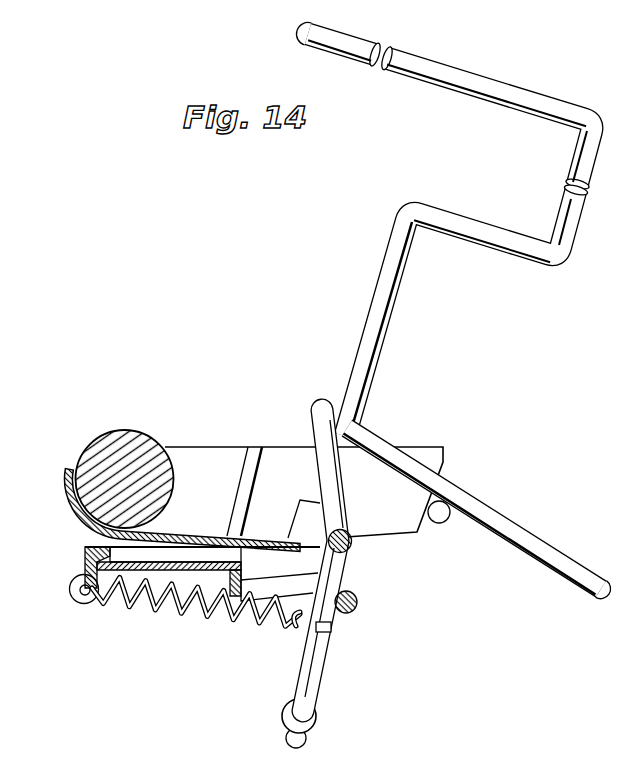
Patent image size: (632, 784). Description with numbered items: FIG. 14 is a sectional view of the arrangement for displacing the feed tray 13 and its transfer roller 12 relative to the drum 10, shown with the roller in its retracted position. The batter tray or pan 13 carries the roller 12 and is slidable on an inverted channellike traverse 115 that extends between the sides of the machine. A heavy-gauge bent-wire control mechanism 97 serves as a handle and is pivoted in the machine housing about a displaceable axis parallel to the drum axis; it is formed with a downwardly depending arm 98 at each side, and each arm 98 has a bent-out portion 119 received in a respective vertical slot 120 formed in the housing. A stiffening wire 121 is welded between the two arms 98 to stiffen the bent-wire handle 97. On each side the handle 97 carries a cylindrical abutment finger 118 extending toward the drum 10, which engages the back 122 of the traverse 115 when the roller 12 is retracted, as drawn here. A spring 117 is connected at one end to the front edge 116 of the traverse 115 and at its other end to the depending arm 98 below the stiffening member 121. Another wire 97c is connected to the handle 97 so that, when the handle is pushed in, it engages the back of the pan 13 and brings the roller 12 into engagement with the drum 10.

The drum 10 is at (25, 448).
The transfer roller 12 is at (140, 458).
The feed tray 13 is at (203, 470).
The bent-wire control mechanism 97 is at (462, 493).
The wire 97c is at (436, 522).
The depending arm 98 is at (317, 647).
The traverse 115 is at (152, 590).
The front edge 116 is at (83, 567).
The spring 117 is at (160, 570).
The cylindrical abutment finger 118 is at (267, 583).
The bent-out portion 119 is at (314, 713).
The vertical slot 120 is at (308, 740).
The stiffening wire 121 is at (355, 603).
The back of the traverse 122 is at (222, 580).